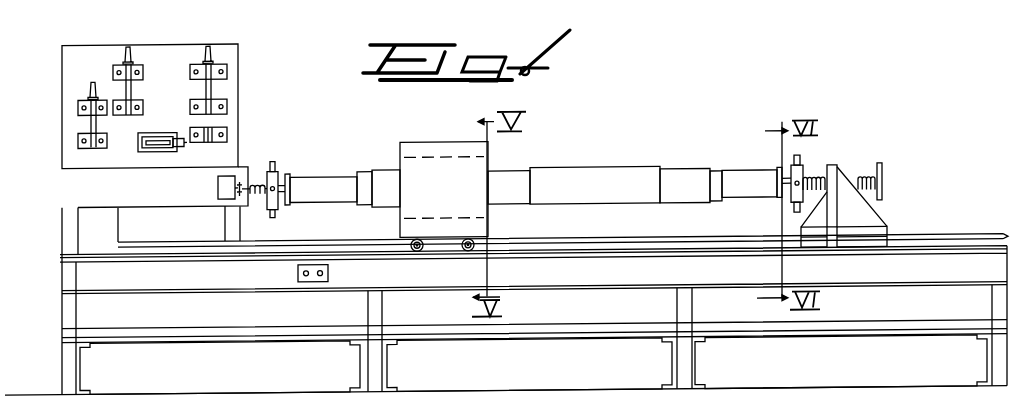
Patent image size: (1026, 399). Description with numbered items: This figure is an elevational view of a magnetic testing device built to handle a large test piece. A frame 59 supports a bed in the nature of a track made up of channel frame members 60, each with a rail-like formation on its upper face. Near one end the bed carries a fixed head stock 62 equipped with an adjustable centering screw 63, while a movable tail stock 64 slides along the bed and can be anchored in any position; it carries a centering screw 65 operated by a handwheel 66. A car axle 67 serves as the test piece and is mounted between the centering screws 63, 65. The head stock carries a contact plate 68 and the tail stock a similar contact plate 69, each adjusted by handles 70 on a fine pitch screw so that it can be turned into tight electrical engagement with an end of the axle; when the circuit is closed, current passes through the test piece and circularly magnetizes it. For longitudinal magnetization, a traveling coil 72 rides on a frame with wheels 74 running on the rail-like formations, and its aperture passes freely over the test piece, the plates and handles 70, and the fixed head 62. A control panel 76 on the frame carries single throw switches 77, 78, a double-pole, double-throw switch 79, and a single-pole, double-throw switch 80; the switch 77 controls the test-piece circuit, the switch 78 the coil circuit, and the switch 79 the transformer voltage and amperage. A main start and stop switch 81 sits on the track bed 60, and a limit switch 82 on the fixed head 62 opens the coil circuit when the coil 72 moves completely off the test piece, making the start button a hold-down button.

The frame 59 is at (693, 364).
The channel frame members 60 is at (608, 282).
The head stock 62 is at (180, 208).
The centering screw 63 is at (286, 175).
The tail stock 64 is at (862, 229).
The centering screw 65 is at (786, 184).
The handwheel 66 is at (882, 175).
The car axle 67 is at (603, 186).
The contact plate 68 is at (266, 180).
The contact plate 69 is at (803, 174).
The handles 70 is at (274, 163).
The traveling coil 72 is at (433, 160).
The wheels 74 is at (423, 253).
The control panel 76 is at (72, 82).
The single throw switch 77 is at (92, 122).
The single throw switch 78 is at (131, 93).
The double-pole, double-throw switch 79 is at (146, 149).
The single-pole, double-throw switch 80 is at (212, 96).
The start and stop switch 81 is at (312, 284).
The limit switch 82 is at (226, 178).